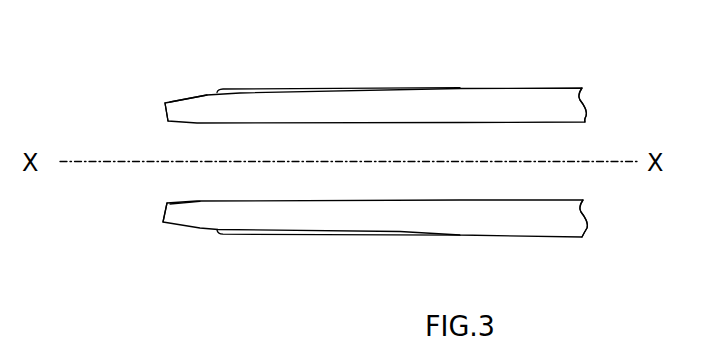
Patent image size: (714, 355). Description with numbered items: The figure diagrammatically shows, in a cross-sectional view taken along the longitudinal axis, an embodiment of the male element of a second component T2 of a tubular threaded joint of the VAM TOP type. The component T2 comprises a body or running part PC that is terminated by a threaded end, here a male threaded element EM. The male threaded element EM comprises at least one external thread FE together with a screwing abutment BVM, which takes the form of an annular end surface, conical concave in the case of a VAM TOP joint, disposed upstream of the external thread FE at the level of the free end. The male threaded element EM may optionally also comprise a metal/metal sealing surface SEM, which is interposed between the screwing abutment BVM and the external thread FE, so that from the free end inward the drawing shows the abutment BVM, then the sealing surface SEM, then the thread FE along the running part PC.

The male threaded element EM is at (438, 88).
The external thread FE is at (271, 90).
The metal/metal sealing surface SEM is at (181, 90).
The screwing abutment BVM is at (158, 102).
The body or running part PC is at (582, 92).
The second component T2 is at (607, 222).